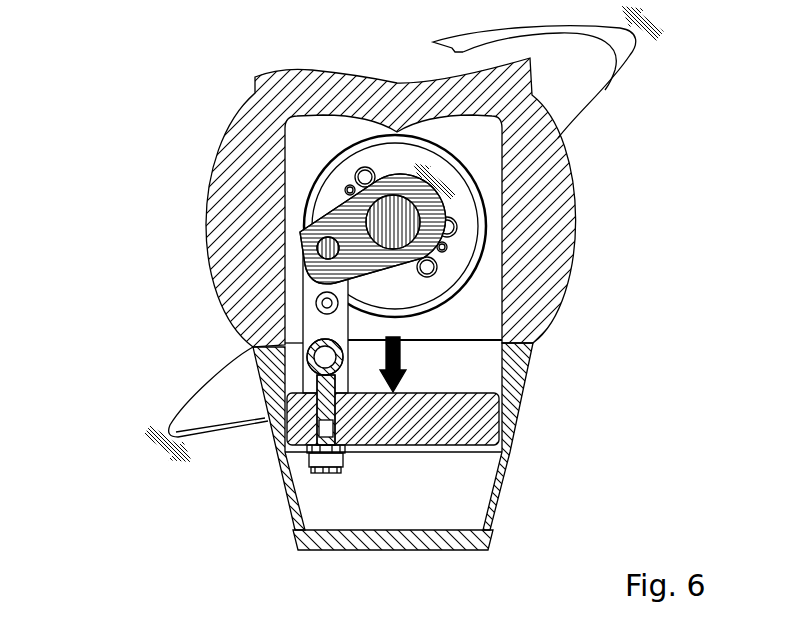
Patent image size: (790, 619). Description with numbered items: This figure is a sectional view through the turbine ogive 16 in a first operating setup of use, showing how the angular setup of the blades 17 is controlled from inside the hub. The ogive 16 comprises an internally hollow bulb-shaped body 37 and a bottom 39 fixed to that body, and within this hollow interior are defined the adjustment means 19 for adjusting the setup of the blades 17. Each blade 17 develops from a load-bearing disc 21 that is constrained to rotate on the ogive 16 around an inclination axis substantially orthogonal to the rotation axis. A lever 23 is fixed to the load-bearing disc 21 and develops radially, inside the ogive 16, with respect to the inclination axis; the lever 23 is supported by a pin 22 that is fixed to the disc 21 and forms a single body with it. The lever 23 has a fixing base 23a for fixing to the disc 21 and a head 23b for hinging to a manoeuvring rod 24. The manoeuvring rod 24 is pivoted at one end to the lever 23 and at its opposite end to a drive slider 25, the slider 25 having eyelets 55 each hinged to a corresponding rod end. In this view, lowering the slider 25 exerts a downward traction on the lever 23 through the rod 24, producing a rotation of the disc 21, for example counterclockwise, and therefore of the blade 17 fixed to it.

The ogive 16 is at (307, 333).
The blade 17 is at (580, 78).
The adjustment means 19 is at (463, 315).
The load-bearing disc 21 is at (455, 207).
The pin 22 is at (447, 248).
The lever 23 is at (254, 153).
The fixing base 23a is at (387, 182).
The head 23b is at (298, 232).
The manoeuvring rod 24 is at (315, 315).
The drive slider 25 is at (477, 430).
The bulb-shaped body 37 is at (235, 177).
The bottom 39 is at (443, 543).
The eyelet 55 is at (313, 372).